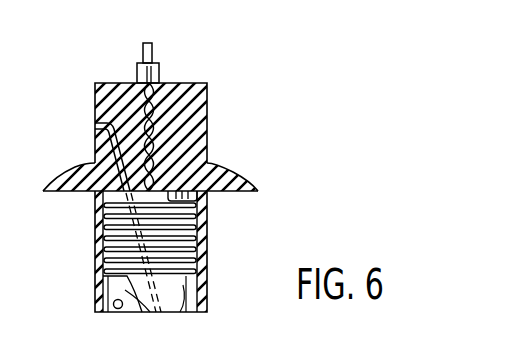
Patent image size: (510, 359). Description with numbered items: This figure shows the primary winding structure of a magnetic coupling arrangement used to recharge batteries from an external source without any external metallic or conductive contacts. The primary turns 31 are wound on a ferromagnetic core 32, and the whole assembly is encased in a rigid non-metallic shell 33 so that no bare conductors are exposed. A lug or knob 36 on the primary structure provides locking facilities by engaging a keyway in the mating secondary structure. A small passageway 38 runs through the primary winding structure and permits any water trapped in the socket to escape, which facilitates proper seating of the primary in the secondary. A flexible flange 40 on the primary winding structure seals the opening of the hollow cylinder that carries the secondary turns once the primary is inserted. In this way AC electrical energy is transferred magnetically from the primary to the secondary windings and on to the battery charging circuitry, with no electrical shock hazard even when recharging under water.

The primary turns 31 is at (181, 300).
The ferromagnetic core 32 is at (214, 170).
The rigid non-metallic shell 33 is at (207, 110).
The lug or knob 36 is at (120, 309).
The small passageway 38 is at (95, 126).
The flexible flange 40 is at (255, 186).